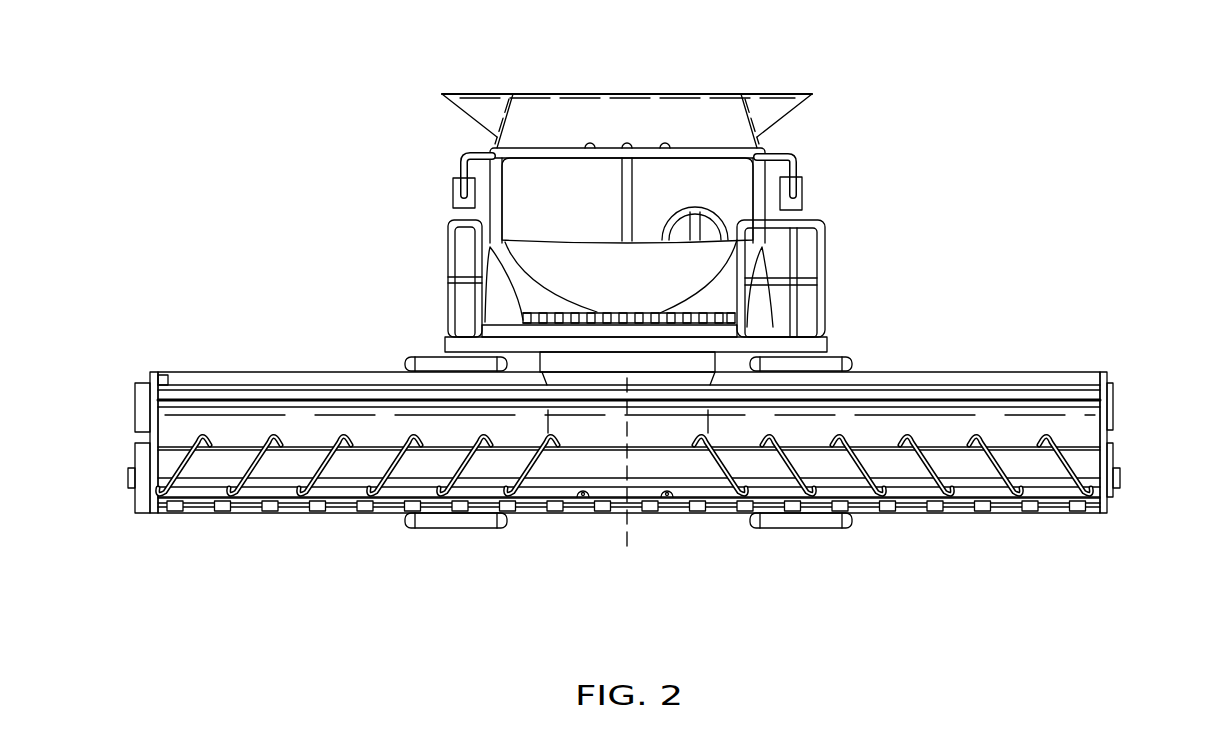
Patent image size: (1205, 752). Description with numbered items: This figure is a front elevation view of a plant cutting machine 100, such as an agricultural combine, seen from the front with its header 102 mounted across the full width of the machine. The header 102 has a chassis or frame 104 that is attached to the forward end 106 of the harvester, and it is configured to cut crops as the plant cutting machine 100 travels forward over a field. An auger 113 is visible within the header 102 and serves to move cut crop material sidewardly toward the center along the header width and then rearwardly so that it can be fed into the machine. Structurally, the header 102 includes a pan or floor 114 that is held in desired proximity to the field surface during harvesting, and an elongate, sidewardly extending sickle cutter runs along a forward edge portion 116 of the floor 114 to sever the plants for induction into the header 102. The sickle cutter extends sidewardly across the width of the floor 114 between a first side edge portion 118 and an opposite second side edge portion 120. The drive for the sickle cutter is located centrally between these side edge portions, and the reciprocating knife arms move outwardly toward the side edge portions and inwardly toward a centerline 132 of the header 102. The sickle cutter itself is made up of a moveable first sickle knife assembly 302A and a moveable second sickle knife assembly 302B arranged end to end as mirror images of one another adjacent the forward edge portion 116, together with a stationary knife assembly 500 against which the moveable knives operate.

The plant cutting machine 100 is at (286, 120).
The header 102 is at (158, 332).
The frame 104 is at (134, 412).
The forward end 106 is at (432, 330).
The auger 113 is at (1087, 467).
The floor 114 is at (278, 495).
The forward edge portion 116 is at (207, 497).
The first side edge portion 118 is at (147, 493).
The second side edge portion 120 is at (1118, 500).
The centerline 132 is at (630, 475).
The first sickle knife assembly 302A is at (593, 572).
The second sickle knife assembly 302B is at (1103, 572).
The stationary knife assembly 500 is at (683, 538).